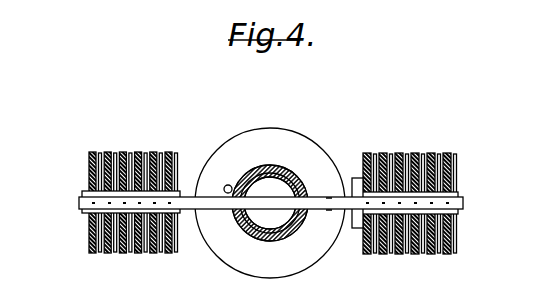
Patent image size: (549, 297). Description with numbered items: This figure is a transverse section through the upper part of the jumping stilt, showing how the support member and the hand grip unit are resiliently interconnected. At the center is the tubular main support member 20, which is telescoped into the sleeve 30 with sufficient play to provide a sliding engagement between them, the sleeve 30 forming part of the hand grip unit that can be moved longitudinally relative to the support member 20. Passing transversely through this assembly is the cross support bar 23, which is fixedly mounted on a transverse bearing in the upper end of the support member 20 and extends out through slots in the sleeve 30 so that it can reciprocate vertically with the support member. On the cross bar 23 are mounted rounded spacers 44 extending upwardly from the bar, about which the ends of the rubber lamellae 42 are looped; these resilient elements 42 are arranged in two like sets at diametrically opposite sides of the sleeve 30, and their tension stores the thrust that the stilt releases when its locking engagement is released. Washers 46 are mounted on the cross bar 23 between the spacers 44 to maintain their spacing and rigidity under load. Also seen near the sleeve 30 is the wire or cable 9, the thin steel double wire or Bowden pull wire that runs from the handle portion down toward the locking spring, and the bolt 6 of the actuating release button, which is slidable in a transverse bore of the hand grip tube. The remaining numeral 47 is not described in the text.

The rounded spacer 44 is at (123, 152).
The rubber lamellae 42 is at (169, 152).
The washer 46 is at (177, 213).
The disc plates 47 is at (447, 153).
The bolt 6 is at (355, 178).
The sleeve 30 is at (300, 178).
The wire or cable 9 is at (231, 186).
The main support member 20 is at (245, 229).
The cross support bar 23 is at (330, 208).